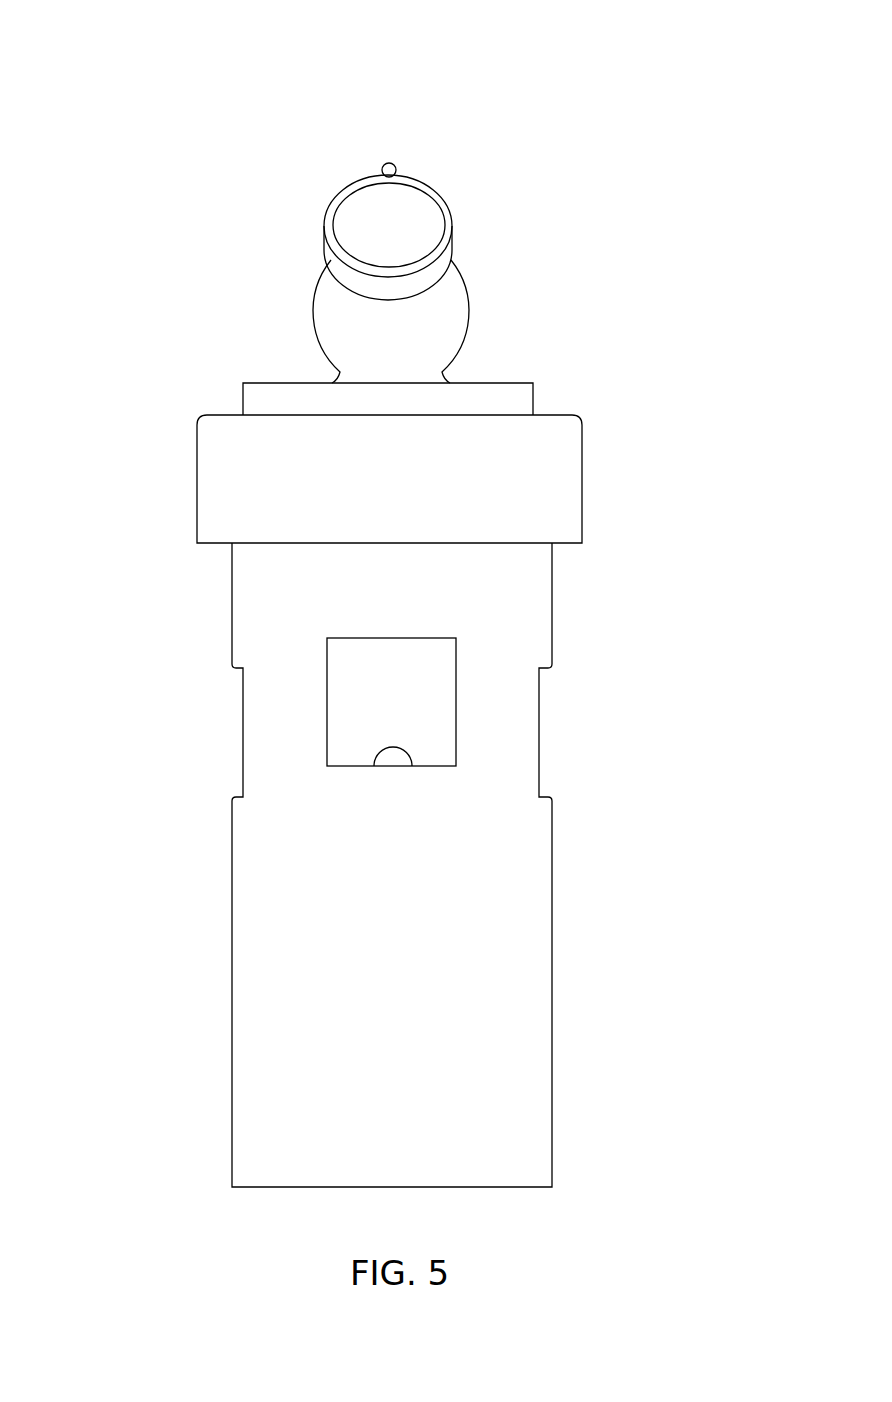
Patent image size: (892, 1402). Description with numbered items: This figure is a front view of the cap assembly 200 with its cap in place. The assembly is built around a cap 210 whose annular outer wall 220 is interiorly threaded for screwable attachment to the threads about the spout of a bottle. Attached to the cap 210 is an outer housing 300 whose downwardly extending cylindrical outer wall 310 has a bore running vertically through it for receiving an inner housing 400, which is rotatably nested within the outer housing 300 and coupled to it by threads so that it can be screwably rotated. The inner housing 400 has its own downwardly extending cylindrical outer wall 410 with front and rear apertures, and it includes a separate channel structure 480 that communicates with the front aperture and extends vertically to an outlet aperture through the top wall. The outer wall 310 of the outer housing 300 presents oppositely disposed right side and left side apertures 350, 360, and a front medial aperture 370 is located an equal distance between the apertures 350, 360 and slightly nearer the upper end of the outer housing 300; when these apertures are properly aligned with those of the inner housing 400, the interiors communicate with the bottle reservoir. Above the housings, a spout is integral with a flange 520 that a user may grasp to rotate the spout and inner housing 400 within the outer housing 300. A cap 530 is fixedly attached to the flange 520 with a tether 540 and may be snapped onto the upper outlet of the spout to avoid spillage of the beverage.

The cap assembly 200 is at (391, 99).
The tether 540 is at (393, 163).
The cap 530 is at (415, 205).
The flange 520 is at (448, 310).
The inner housing 400 is at (480, 364).
The outer wall of inner housing 410 is at (517, 397).
The cap 210 is at (466, 473).
The annular outer wall 220 is at (563, 514).
The outer housing 300 is at (387, 865).
The outer wall of outer housing 310 is at (513, 1125).
The left side aperture 360 is at (243, 734).
The right side aperture 350 is at (539, 730).
The channel structure 480 is at (420, 652).
The front medial aperture 370 is at (375, 767).